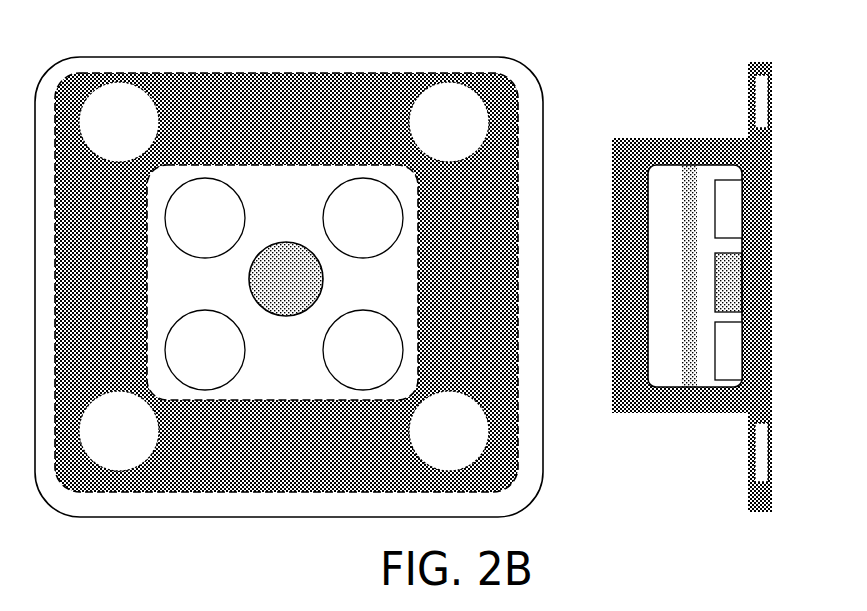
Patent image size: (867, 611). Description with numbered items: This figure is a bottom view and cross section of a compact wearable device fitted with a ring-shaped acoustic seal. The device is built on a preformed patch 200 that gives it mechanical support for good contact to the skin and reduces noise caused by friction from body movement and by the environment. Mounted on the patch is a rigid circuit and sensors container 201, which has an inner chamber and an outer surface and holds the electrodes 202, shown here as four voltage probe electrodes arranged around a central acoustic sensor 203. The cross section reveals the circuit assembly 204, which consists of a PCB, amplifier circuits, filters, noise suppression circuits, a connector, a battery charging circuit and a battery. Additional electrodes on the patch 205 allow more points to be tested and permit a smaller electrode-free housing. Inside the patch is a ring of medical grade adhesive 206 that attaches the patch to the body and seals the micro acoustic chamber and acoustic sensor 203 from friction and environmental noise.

The preformed patch 200 is at (232, 57).
The circuit and sensors container 201 is at (222, 175).
The electrodes 202 is at (191, 228).
The acoustic sensor 203 is at (272, 289).
The circuit assembly 204 is at (672, 276).
The electrodes on the patch 205 is at (105, 132).
The ring of medical grade adhesive 206 is at (271, 463).